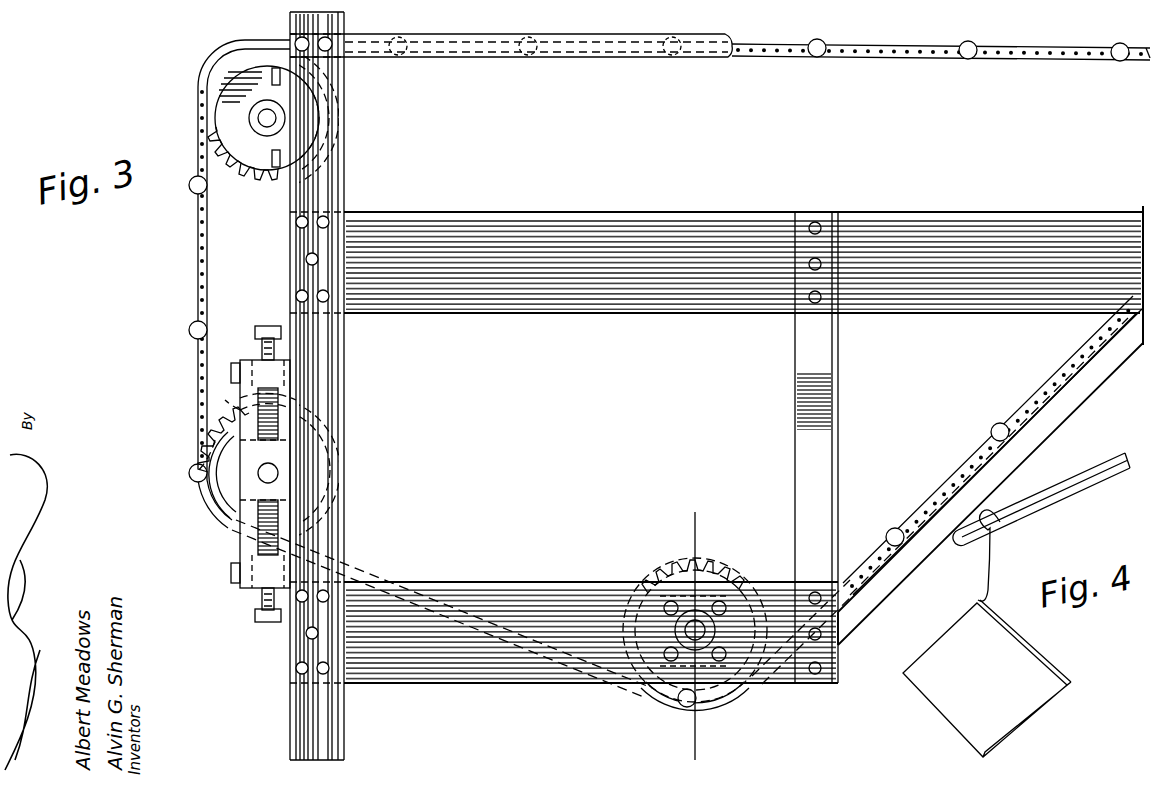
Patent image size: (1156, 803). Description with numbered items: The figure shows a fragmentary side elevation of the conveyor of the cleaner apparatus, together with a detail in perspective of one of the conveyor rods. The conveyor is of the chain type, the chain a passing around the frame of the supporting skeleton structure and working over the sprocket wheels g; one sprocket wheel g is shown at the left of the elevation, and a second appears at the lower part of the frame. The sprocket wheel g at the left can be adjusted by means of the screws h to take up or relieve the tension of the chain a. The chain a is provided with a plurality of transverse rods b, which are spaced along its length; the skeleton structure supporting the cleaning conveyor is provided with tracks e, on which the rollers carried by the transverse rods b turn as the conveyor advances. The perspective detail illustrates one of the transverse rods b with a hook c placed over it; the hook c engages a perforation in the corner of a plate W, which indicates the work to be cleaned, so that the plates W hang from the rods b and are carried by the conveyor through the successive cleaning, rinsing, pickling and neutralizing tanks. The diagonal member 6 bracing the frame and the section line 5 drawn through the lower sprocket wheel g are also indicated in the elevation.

In FIG. 3, the chain a is at (194, 240).
In FIG. 3, the transverse rod b is at (236, 42).
In FIG. 3, the track e is at (1003, 60).
In FIG. 3, the sprocket wheel g is at (262, 180).
In FIG. 3, the screw h is at (198, 355).
In FIG. 3, the section line 5 is at (671, 751).
In FIG. 3, the brace 6 is at (1003, 440).
In FIG. 4, the hook c is at (985, 572).
In FIG. 4, the work W is at (916, 660).